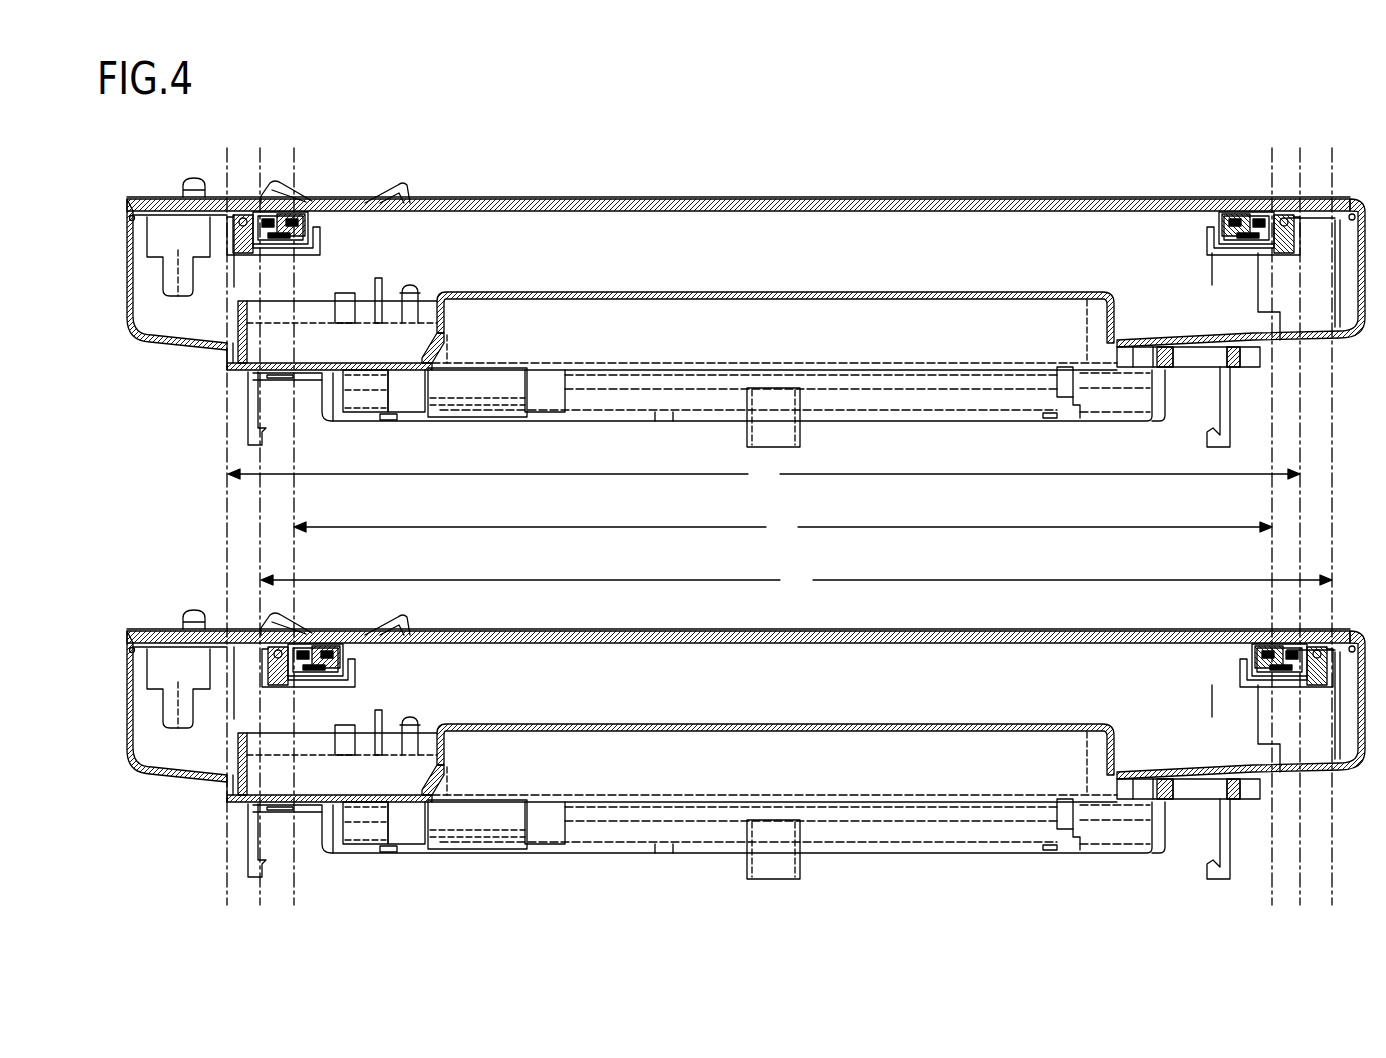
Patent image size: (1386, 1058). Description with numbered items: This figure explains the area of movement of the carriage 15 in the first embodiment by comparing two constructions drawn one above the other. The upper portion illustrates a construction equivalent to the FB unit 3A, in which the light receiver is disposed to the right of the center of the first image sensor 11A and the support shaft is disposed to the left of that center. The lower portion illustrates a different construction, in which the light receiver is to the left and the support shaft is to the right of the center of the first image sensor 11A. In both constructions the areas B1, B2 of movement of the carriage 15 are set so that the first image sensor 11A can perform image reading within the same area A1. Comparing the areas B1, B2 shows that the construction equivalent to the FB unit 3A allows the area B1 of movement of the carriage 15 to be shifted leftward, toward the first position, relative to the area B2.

The FB unit 3A is at (166, 187).
The first image sensor 11A is at (308, 213).
The carriage 15 is at (320, 237).
The area of movement of the carriage B1 is at (764, 473).
The area of image reading A1 is at (783, 526).
The area of movement of the carriage B2 is at (796, 579).